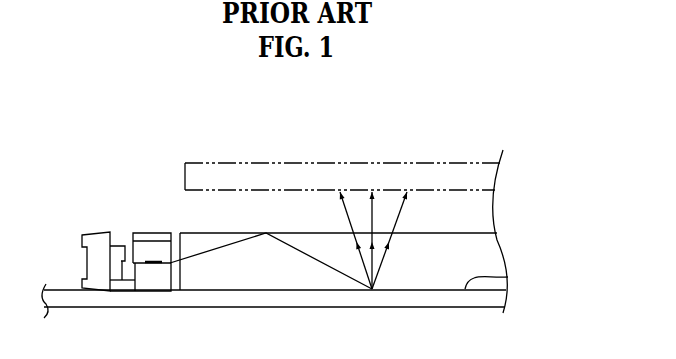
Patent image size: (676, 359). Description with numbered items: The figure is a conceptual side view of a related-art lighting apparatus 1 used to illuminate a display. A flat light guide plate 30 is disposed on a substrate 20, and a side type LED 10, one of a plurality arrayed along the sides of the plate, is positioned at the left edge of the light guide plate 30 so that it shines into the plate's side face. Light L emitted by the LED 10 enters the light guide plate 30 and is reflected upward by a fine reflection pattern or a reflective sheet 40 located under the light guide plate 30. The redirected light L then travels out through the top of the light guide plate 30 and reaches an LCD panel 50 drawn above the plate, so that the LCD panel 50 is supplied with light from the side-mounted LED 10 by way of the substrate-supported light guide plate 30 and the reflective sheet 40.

The lighting apparatus 1 is at (175, 115).
The side type LED 10 is at (130, 225).
The substrate 20 is at (328, 306).
The light guide plate 30 is at (490, 247).
The reflective sheet 40 is at (508, 277).
The LCD panel 50 is at (362, 162).
The light L is at (203, 254).